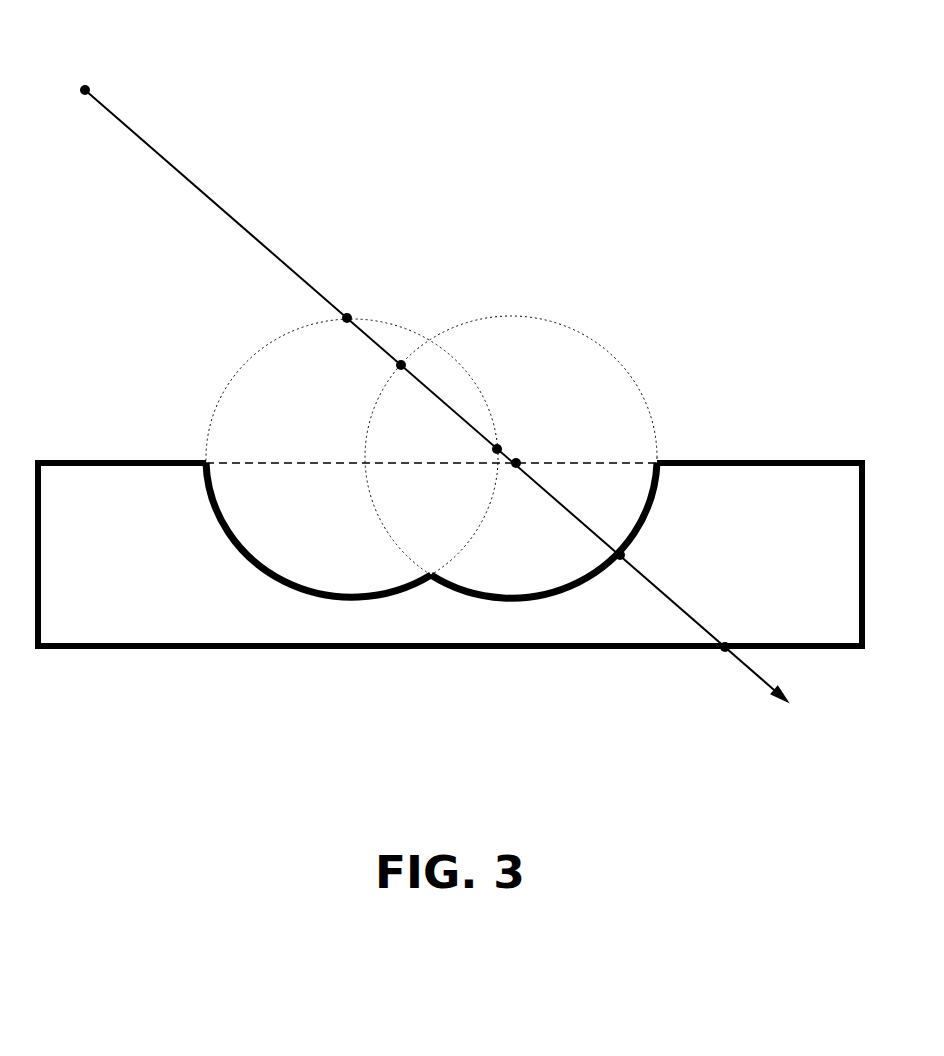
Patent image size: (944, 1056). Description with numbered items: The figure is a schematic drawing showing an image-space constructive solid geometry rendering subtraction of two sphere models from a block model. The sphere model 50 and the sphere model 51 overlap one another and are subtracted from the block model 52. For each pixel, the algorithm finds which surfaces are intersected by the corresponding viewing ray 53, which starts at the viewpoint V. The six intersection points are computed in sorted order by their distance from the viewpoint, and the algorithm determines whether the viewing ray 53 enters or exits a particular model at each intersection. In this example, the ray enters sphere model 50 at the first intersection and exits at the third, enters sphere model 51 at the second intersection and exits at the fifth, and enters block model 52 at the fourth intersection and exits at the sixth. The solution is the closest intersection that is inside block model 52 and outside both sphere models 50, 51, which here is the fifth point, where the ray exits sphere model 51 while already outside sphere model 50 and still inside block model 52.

The sphere model 50 is at (258, 368).
The sphere model 51 is at (528, 333).
The block model 52 is at (605, 462).
The viewing ray 53 is at (146, 138).